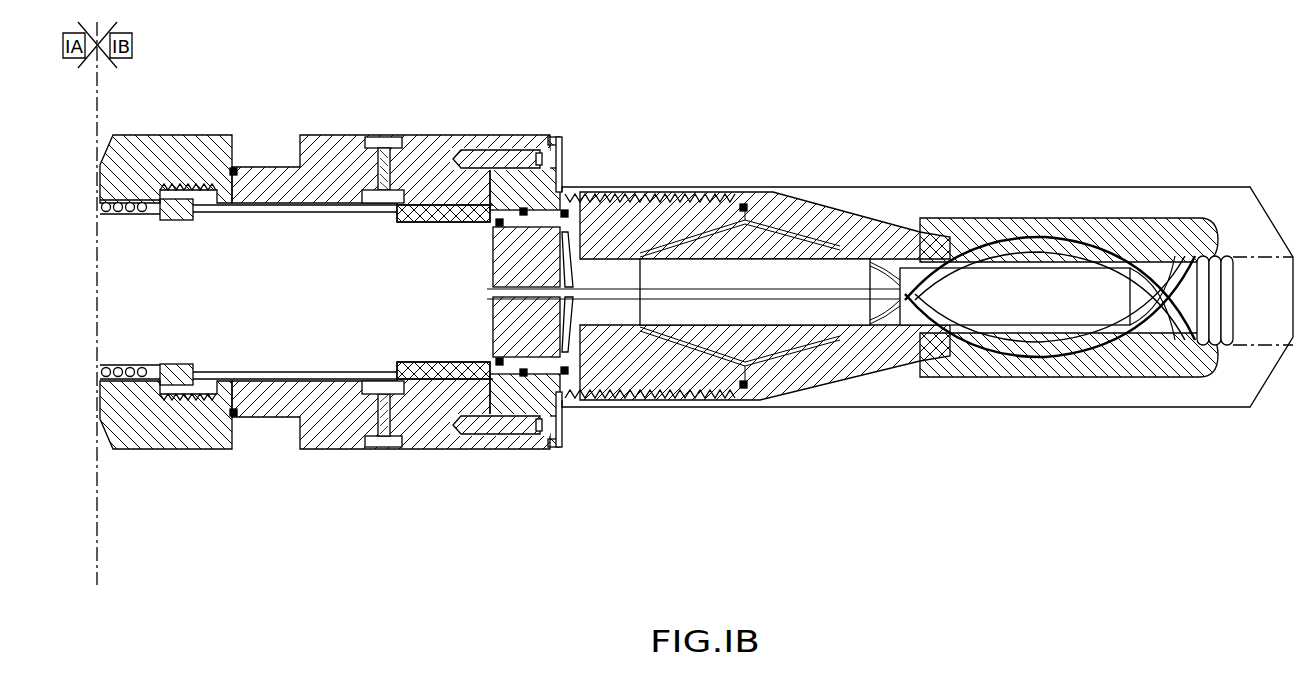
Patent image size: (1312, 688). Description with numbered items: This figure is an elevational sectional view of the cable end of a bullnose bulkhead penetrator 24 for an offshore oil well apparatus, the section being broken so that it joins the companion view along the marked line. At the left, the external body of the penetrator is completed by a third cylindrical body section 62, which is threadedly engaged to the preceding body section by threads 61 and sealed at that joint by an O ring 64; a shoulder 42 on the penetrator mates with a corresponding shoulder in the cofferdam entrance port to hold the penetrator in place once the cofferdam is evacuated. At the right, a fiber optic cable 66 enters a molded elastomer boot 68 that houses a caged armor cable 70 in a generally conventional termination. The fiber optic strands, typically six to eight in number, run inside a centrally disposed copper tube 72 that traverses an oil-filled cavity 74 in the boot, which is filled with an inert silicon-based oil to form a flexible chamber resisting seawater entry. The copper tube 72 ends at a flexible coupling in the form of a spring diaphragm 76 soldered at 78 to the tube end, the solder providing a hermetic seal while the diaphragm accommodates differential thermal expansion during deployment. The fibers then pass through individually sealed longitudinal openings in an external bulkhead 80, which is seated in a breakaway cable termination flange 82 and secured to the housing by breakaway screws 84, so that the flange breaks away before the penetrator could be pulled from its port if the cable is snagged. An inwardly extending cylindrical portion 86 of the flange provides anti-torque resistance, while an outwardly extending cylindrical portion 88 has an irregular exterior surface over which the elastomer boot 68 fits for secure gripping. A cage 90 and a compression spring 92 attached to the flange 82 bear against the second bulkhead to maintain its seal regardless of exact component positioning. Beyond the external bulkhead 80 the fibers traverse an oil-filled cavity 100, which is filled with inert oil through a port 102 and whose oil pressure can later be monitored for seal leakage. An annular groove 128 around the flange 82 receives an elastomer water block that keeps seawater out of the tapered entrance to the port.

The bullnose bulkhead penetrator 24 is at (840, 134).
The shoulder 42 is at (107, 143).
The threads 61 is at (177, 188).
The third cylindrical body section 62 is at (343, 138).
The O ring 64 is at (236, 168).
The fiber optic cable 66 is at (1293, 345).
The molded elastomer boot 68 is at (898, 188).
The caged armor cable 70 is at (1080, 318).
The copper tube 72 is at (645, 293).
The oil-filled cavity 74 is at (773, 322).
The spring diaphragm 76 is at (396, 322).
The soldered connection 78 is at (570, 300).
The external bulkhead 80 is at (505, 256).
The breakaway cable termination flange 82 is at (556, 188).
The breakaway screws 84 is at (548, 170).
The inwardly extending cylindrical portion 86 is at (413, 217).
The outwardly extending cylindrical portion 88 is at (638, 403).
The cage 90 is at (172, 217).
The compression spring 92 is at (117, 365).
The oil-filled cavity 100 is at (470, 304).
The port 102 is at (413, 140).
The annular groove 128 is at (560, 143).